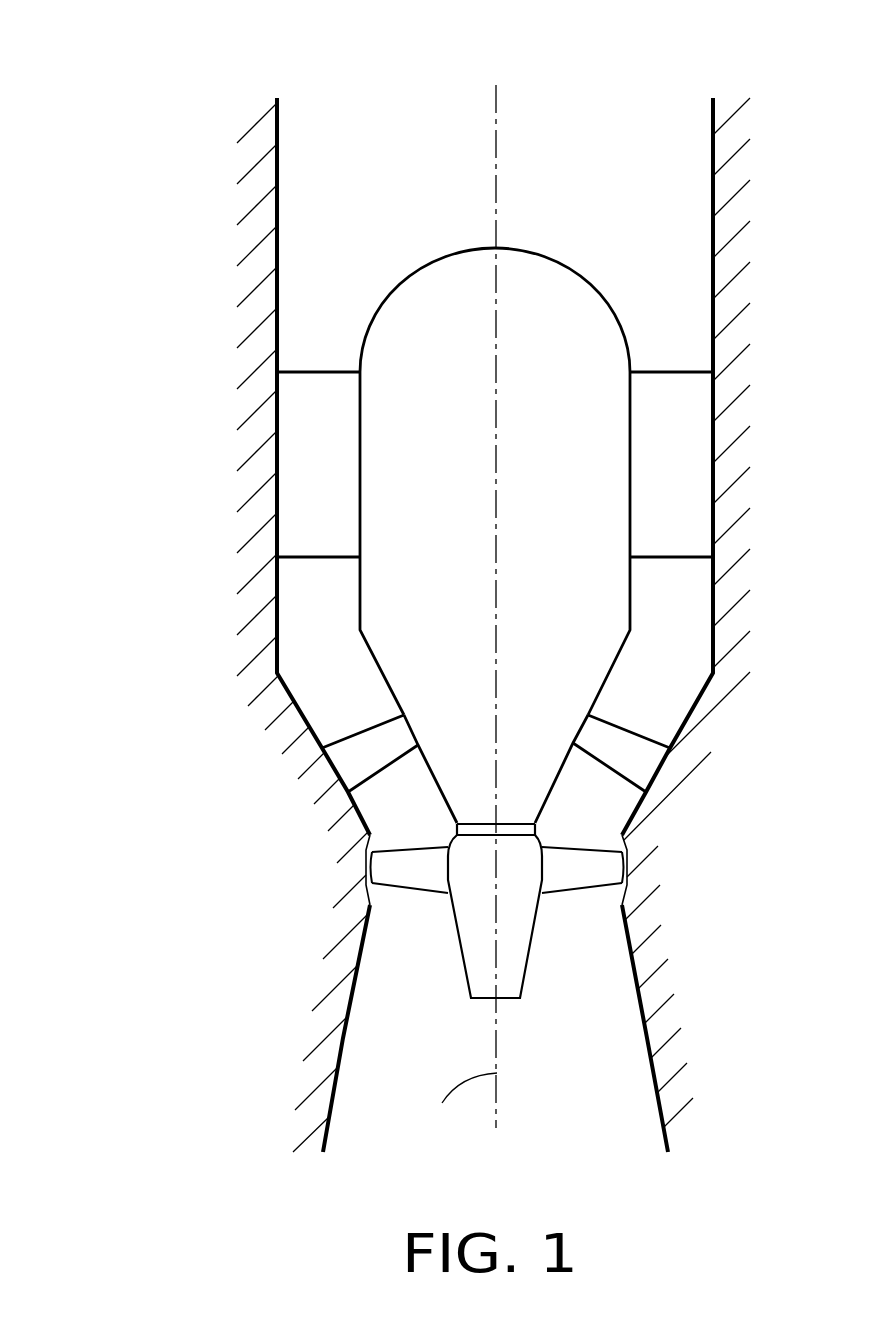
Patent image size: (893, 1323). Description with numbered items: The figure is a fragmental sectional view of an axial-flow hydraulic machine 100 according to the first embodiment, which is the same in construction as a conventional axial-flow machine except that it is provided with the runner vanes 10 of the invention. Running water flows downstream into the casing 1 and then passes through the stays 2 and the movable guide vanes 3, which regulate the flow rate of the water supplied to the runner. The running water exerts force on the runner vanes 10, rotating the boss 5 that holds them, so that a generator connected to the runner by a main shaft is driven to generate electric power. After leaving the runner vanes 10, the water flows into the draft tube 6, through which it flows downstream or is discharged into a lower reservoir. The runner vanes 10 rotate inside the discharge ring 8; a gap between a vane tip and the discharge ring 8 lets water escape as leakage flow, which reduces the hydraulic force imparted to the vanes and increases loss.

The axial-flow hydraulic machine 100 is at (118, 116).
The casing 1 is at (713, 168).
The stays 2 is at (664, 382).
The movable guide vanes 3 is at (622, 743).
The boss 5 is at (513, 963).
The draft tube 6 is at (649, 1049).
The discharge ring 8 is at (628, 858).
The runner vane 10 is at (572, 858).